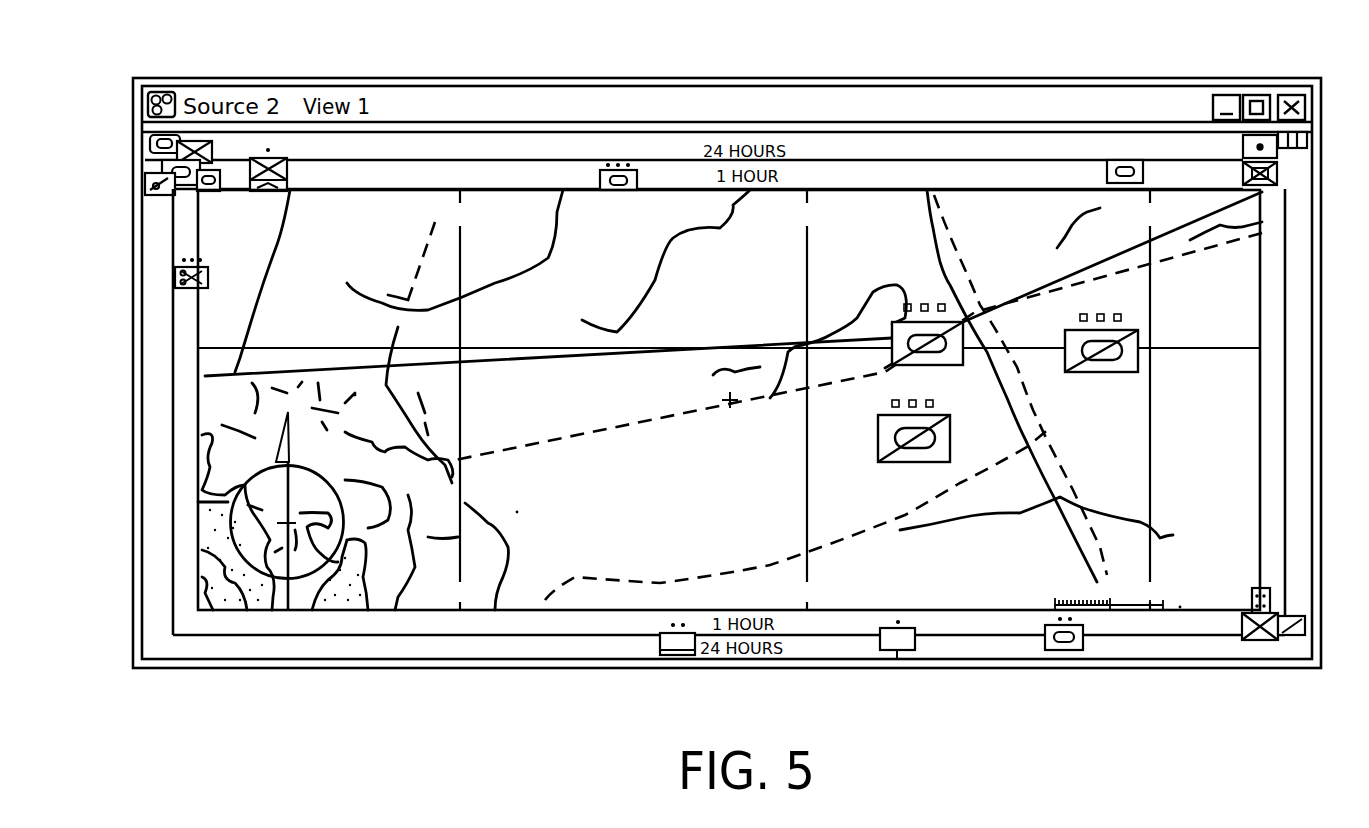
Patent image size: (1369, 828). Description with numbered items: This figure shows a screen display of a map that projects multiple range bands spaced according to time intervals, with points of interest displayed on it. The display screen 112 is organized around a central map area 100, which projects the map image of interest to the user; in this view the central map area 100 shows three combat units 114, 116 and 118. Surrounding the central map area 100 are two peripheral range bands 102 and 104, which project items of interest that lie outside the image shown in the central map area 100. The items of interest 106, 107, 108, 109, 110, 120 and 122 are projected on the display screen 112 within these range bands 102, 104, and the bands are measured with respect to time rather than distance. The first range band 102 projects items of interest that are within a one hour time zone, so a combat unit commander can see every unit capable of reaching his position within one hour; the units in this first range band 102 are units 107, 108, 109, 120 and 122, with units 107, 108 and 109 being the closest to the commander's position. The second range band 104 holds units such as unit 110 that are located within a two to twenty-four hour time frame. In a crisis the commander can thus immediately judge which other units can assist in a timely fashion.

The central map area 100 is at (575, 598).
The first range band 102 is at (467, 636).
The second range band 104 is at (413, 648).
The item of interest 106 is at (900, 655).
The unit 107 is at (1265, 186).
The unit 108 is at (1262, 641).
The unit 109 is at (1125, 160).
The unit 110 is at (1305, 150).
The display screen 112 is at (207, 503).
The combat unit 114 is at (922, 302).
The combat unit 116 is at (910, 463).
The combat unit 118 is at (1110, 373).
The unit 120 is at (273, 158).
The unit 122 is at (175, 270).